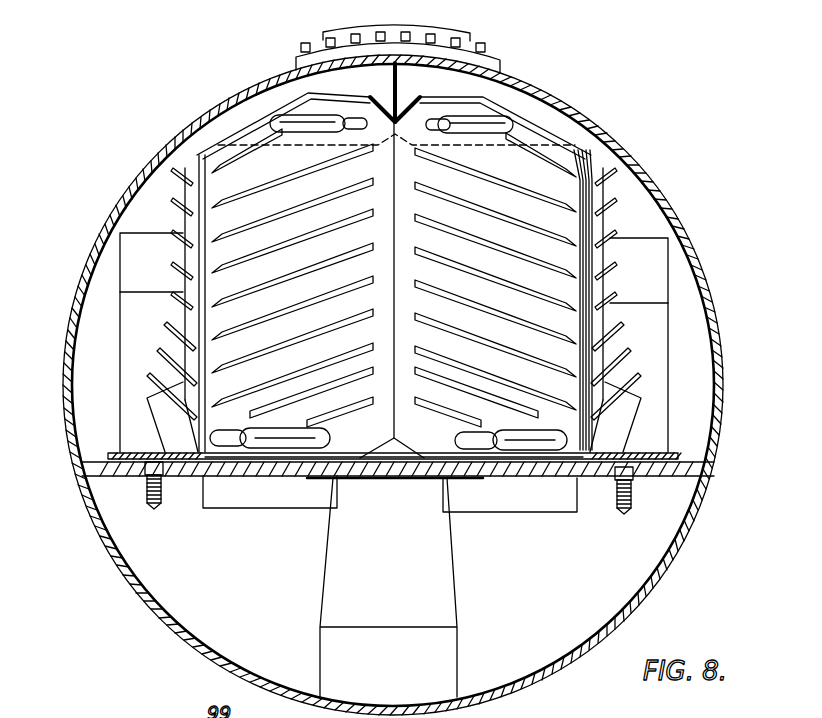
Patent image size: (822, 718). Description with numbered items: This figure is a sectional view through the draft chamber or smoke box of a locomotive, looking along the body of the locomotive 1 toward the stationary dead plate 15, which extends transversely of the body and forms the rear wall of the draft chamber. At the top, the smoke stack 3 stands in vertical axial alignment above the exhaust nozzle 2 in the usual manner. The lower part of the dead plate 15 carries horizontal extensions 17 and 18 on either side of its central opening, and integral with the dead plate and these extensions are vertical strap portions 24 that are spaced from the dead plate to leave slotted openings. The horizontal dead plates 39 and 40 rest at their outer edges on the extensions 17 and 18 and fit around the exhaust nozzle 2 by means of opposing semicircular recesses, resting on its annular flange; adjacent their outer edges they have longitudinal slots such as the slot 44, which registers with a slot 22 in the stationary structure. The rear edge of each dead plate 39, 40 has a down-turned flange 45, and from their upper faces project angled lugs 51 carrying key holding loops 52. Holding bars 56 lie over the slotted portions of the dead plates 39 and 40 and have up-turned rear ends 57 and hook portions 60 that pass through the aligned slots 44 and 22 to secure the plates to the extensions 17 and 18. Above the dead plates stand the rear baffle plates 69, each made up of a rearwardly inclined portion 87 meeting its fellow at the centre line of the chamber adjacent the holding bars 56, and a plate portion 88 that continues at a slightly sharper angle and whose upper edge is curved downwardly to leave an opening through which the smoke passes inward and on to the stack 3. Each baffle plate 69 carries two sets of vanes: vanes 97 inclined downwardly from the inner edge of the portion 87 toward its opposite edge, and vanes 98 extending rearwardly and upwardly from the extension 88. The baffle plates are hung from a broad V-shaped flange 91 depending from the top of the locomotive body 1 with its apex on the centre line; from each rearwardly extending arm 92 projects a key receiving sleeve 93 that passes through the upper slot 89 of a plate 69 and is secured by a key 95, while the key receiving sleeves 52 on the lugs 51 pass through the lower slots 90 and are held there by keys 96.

The body of the locomotive 1 is at (713, 375).
The exhaust nozzle 2 is at (447, 600).
The smoke stack 3 is at (470, 30).
The stationary dead plate 15 is at (136, 230).
The horizontal extension 17 is at (700, 490).
The horizontal extension 18 is at (95, 480).
The slot 22 is at (148, 480).
The vertical strap portion 24 is at (133, 255).
The horizontal dead plate 39 is at (540, 473).
The horizontal dead plate 40 is at (260, 460).
The longitudinal slot 44 is at (108, 455).
The down-turned flange 45 is at (220, 477).
The lug 51 is at (230, 460).
The key holding loop 52 is at (322, 420).
The holding bar 56 is at (140, 450).
The up-turned rear end 57 is at (120, 327).
The hook portion 60 is at (168, 498).
The rear baffle plate 69 is at (398, 427).
The rearwardly inclined portion 87 is at (335, 337).
The plate portion 88 is at (177, 347).
The upper slot 89 is at (442, 125).
The lower slot 90 is at (313, 462).
The V-shaped flange 91 is at (399, 82).
The arm 92 is at (242, 110).
The key receiving sleeve 93 is at (297, 117).
The key 95 is at (353, 122).
The key 96 is at (333, 442).
The vane 97 is at (205, 196).
The vane 98 is at (180, 268).